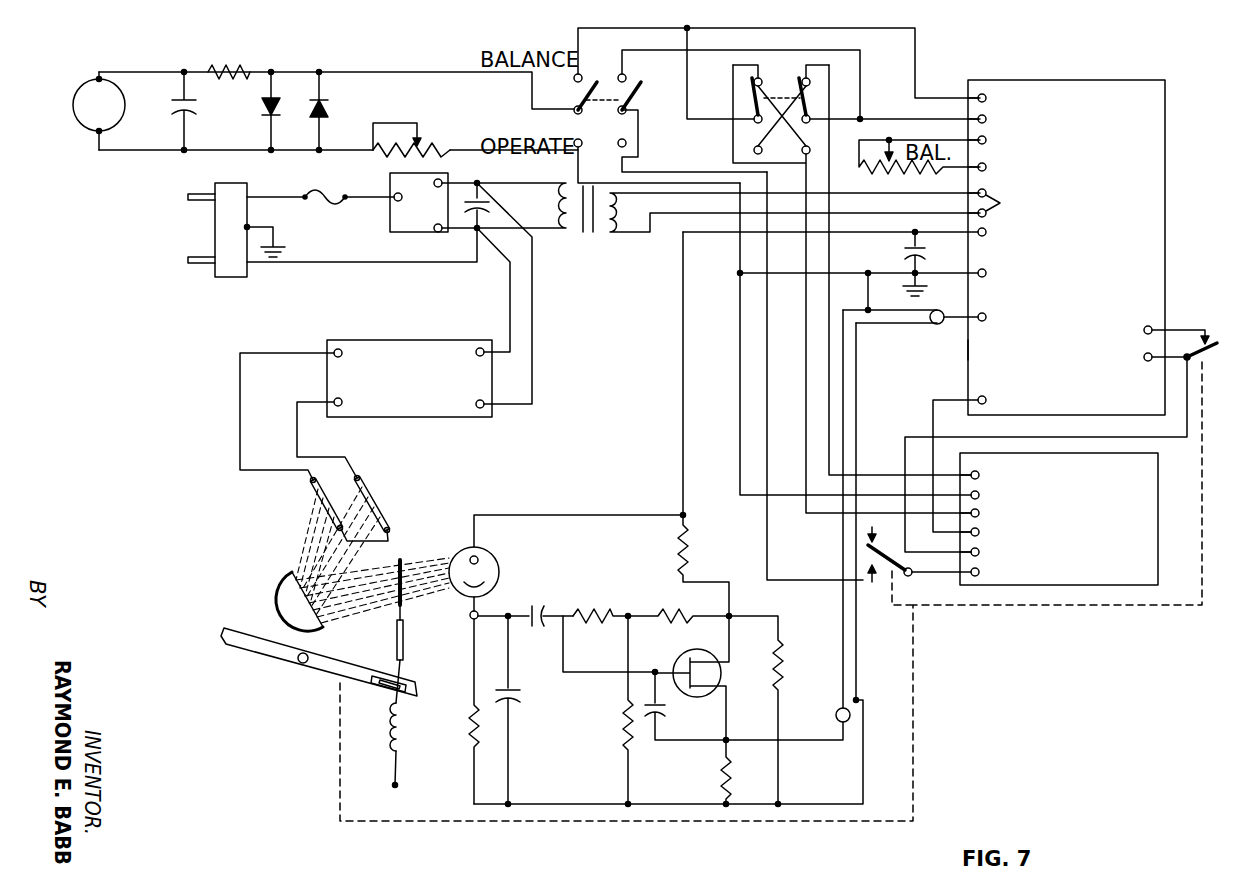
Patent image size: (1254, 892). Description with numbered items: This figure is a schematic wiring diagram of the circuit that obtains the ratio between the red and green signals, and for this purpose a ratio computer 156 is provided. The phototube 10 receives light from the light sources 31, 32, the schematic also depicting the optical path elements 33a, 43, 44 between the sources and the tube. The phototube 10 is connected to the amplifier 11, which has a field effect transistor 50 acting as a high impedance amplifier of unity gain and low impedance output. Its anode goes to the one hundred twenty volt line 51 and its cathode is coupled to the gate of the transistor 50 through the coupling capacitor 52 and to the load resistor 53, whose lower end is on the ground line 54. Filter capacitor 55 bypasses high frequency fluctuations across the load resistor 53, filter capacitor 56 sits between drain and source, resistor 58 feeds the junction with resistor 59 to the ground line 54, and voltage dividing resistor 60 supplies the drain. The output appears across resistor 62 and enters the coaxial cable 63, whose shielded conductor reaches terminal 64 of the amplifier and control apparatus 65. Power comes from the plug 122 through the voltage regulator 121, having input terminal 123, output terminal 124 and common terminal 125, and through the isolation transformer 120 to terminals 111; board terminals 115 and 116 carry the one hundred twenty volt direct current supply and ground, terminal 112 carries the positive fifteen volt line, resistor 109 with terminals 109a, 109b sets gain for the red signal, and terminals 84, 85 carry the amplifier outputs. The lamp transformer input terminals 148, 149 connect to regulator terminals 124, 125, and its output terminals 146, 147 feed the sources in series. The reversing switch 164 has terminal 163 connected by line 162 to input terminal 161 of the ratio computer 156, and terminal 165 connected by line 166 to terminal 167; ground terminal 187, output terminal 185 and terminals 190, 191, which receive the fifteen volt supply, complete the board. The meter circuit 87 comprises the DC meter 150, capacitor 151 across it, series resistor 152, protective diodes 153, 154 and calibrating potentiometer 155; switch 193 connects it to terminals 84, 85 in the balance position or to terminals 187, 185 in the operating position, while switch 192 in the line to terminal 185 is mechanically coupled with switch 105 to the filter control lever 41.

The DC meter 150 is at (74, 104).
The capacitor 151 is at (172, 108).
The meter circuit 87 is at (243, 139).
The resistor 152 is at (250, 70).
The diode 153 is at (275, 100).
The diode 154 is at (323, 100).
The calibrating potentiometer 155 is at (446, 130).
The switch 193 is at (564, 116).
The plug 122 is at (215, 226).
The input terminal 123 is at (392, 194).
The voltage regulator 121 is at (442, 183).
The output terminal 124 is at (402, 197).
The common terminal 125 is at (436, 232).
The isolation transformer 120 is at (590, 232).
The reversing switch 164 is at (780, 128).
The switch terminal 165 is at (756, 76).
The switch terminal 163 is at (804, 77).
The line 162 is at (830, 96).
The line 166 is at (732, 144).
The ratio computer 156 is at (1082, 590).
The terminal 85 is at (986, 98).
The terminal 84 is at (986, 119).
The terminal 109a is at (986, 140).
The terminal 109b is at (986, 167).
The resistor 109 is at (890, 172).
The terminals 111 is at (1006, 203).
The terminal 115 is at (986, 232).
The terminal 116 is at (986, 273).
The input terminal 64 is at (986, 317).
The amplifier and control apparatus 65 is at (968, 348).
The terminal 112 is at (986, 400).
The switch 105 is at (1220, 346).
The board input terminal 161 is at (979, 475).
The ground terminal 187 is at (979, 495).
The terminal 167 is at (979, 513).
The terminal 190 is at (979, 532).
The terminal 191 is at (979, 552).
The terminal 185 is at (979, 572).
The switch 192 is at (884, 572).
The output terminal 146 is at (356, 336).
The input terminal 149 is at (478, 348).
The output terminal 147 is at (340, 406).
The input terminal 148 is at (478, 408).
The light source 31 is at (308, 493).
The light source 32 is at (392, 503).
The mirror 33a is at (286, 594).
The slit 43 is at (404, 600).
The slit member 44 is at (404, 645).
The filter control lever 41 is at (328, 672).
The phototube 10 is at (497, 566).
The one hundred twenty volt line 51 is at (630, 512).
The voltage dividing resistor 60 is at (684, 548).
The coupling capacitor 52 is at (542, 608).
The resistor 58 is at (672, 614).
The transistor 50 is at (686, 648).
The load resistor 53 is at (470, 714).
The filter capacitor 55 is at (522, 694).
The resistor 59 is at (624, 702).
The filter capacitor 56 is at (666, 710).
The resistor 62 is at (722, 776).
The ground line 54 is at (546, 802).
The amplifier 11 is at (582, 749).
The coaxial cable 63 is at (850, 684).